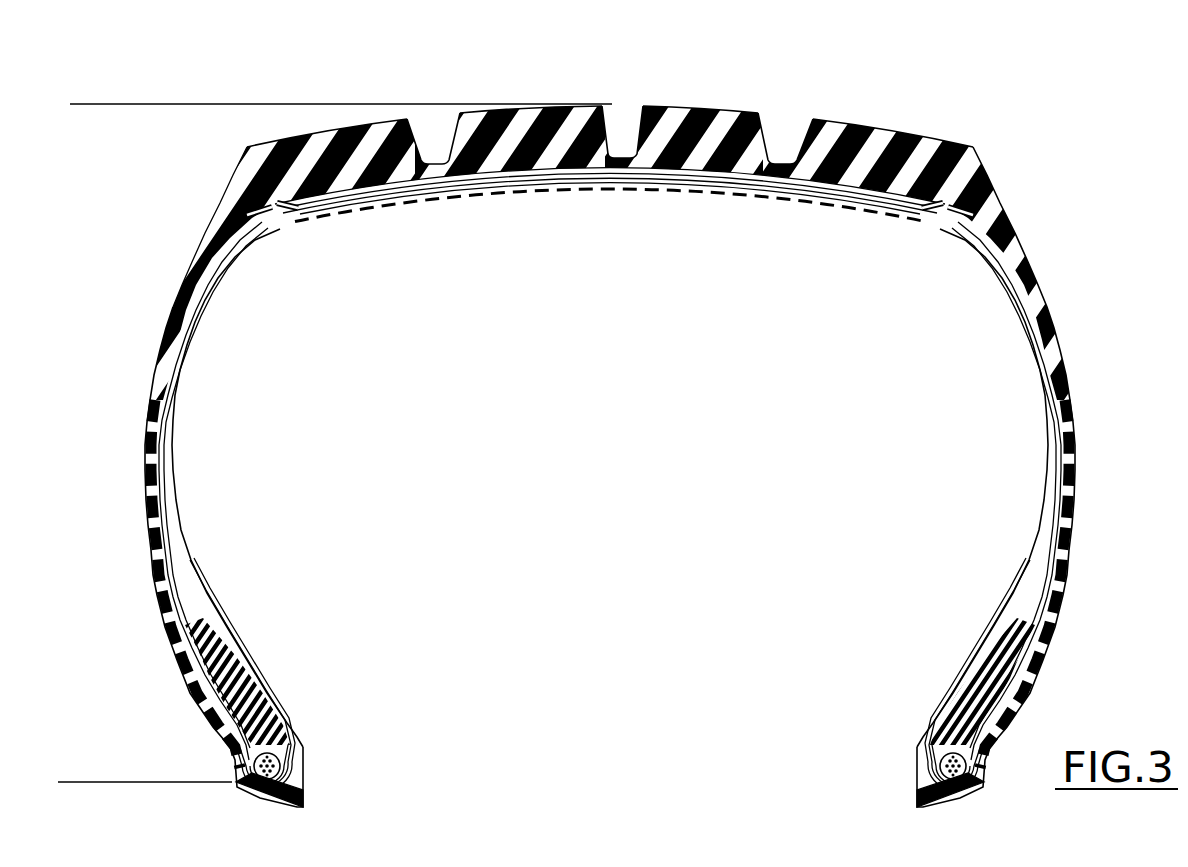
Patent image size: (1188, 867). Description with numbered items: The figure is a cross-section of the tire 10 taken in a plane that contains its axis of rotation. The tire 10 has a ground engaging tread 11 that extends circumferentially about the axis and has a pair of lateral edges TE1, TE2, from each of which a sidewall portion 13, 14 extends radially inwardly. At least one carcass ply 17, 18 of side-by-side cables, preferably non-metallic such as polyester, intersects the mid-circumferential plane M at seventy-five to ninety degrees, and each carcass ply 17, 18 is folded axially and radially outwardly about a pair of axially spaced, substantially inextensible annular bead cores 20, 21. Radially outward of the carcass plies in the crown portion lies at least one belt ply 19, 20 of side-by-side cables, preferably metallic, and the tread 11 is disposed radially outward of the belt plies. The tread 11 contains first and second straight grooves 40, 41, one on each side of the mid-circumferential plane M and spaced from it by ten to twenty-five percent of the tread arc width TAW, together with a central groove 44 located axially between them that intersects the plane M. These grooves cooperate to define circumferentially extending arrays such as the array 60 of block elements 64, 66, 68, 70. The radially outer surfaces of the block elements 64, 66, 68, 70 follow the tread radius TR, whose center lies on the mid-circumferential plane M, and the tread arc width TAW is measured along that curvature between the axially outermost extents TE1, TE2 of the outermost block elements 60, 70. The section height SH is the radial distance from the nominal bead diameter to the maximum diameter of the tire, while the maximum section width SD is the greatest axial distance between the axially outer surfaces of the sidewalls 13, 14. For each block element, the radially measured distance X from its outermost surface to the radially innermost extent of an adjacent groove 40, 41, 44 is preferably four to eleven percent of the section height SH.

The tire 10 is at (1108, 165).
The ground engaging tread 11 is at (328, 158).
The sidewall portion 13 is at (147, 455).
The sidewall portion 14 is at (1077, 413).
The carcass ply 17 is at (168, 405).
The carcass ply 18 is at (173, 380).
The belt ply 19 is at (266, 213).
The bead core 20 is at (253, 765).
The bead core 21 is at (968, 773).
The first straight groove 40 is at (428, 138).
The second straight groove 41 is at (780, 140).
The central groove 44 is at (620, 133).
The circumferentially extending array of block elements 60 is at (248, 176).
The block element 64 is at (382, 158).
The block element 66 is at (521, 150).
The block element 68 is at (678, 143).
The block element 70 is at (892, 167).
The tread arc width TAW is at (233, 90).
The lateral edge of the tread TE1 is at (247, 142).
The lateral edge of the tread TE2 is at (992, 85).
The section height SH is at (70, 782).
The maximum section width SD is at (143, 445).
The tread radius TR is at (712, 110).
The mid-circumferential plane M is at (608, 80).
The radially measured distance X is at (449, 170).